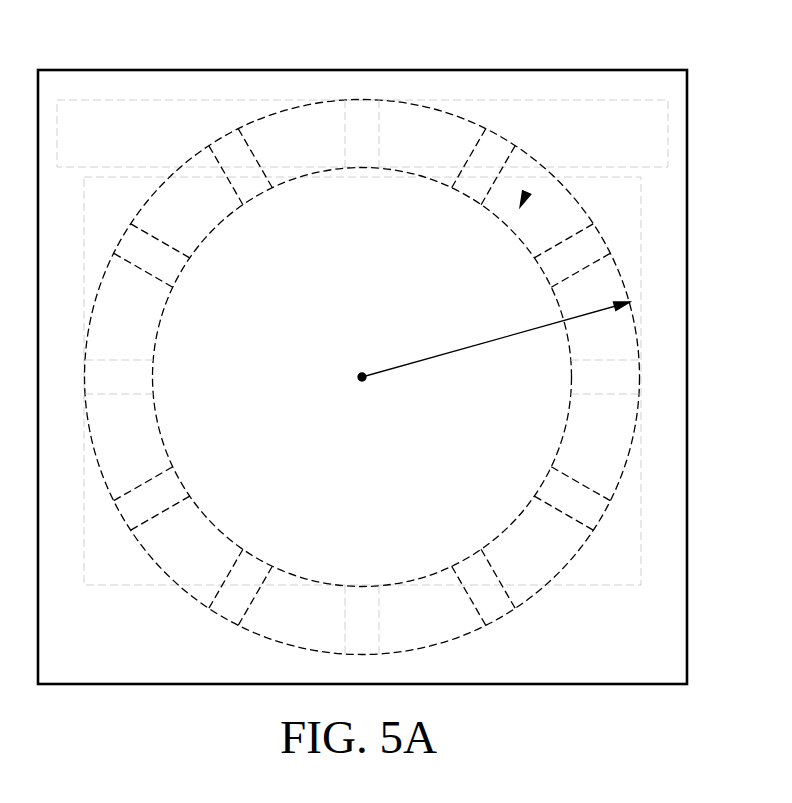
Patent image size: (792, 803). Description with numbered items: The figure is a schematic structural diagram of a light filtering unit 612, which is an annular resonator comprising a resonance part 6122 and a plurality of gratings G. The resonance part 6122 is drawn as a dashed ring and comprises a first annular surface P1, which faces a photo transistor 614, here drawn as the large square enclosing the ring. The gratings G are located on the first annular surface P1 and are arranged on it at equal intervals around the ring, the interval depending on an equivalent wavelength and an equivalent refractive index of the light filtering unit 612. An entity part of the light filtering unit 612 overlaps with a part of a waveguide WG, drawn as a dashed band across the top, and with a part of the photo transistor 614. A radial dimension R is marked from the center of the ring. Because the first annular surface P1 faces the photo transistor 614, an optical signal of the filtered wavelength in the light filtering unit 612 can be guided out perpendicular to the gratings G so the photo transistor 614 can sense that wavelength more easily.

The photo transistor 614 is at (677, 382).
The waveguide WG is at (635, 132).
The light filtering unit 612 is at (468, 117).
The resonance part 6122 is at (421, 137).
The gratings G is at (362, 128).
The first annular surface P1 is at (522, 203).
The radius R is at (494, 341).